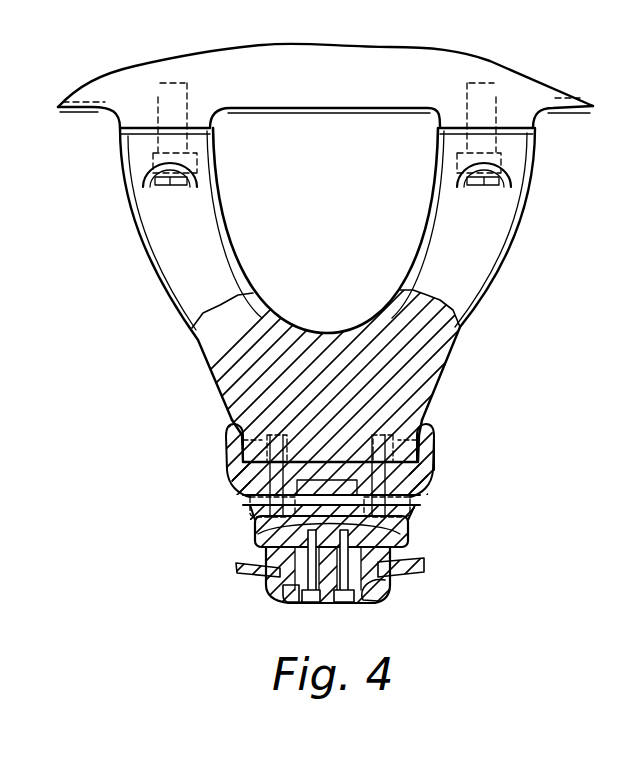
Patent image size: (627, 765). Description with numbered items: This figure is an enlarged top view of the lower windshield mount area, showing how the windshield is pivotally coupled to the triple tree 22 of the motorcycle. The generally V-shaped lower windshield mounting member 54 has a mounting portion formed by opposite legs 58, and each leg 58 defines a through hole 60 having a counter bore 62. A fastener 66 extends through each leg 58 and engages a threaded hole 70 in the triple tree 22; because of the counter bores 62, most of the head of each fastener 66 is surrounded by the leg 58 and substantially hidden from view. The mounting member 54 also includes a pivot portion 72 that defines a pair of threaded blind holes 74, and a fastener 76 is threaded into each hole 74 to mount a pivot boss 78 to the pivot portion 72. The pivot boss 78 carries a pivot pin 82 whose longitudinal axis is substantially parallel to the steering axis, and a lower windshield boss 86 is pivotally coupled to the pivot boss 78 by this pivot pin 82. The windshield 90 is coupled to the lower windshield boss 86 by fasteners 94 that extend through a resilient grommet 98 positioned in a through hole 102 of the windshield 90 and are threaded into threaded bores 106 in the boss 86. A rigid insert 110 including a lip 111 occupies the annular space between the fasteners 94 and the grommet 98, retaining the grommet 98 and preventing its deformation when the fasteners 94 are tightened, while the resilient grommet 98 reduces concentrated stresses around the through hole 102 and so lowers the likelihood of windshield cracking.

The triple tree 22 is at (298, 62).
The lower windshield mounting member 54 is at (455, 291).
The leg 58 is at (213, 150).
The through hole 60 is at (120, 141).
The counter bore 62 is at (153, 158).
The fastener 66 is at (168, 173).
The threaded hole 70 is at (158, 98).
The pivot portion 72 is at (228, 415).
The threaded blind hole 74 is at (226, 441).
The fastener 76 is at (243, 512).
The pivot boss 78 is at (436, 427).
The pivot pin 82 is at (245, 500).
The lower windshield boss 86 is at (413, 528).
The windshield 90 is at (243, 574).
The fastener 94 is at (302, 604).
The resilient grommet 98 is at (266, 588).
The through hole 102 is at (375, 562).
The threaded bore 106 is at (258, 534).
The rigid insert 110 is at (285, 605).
The lip 111 is at (382, 596).